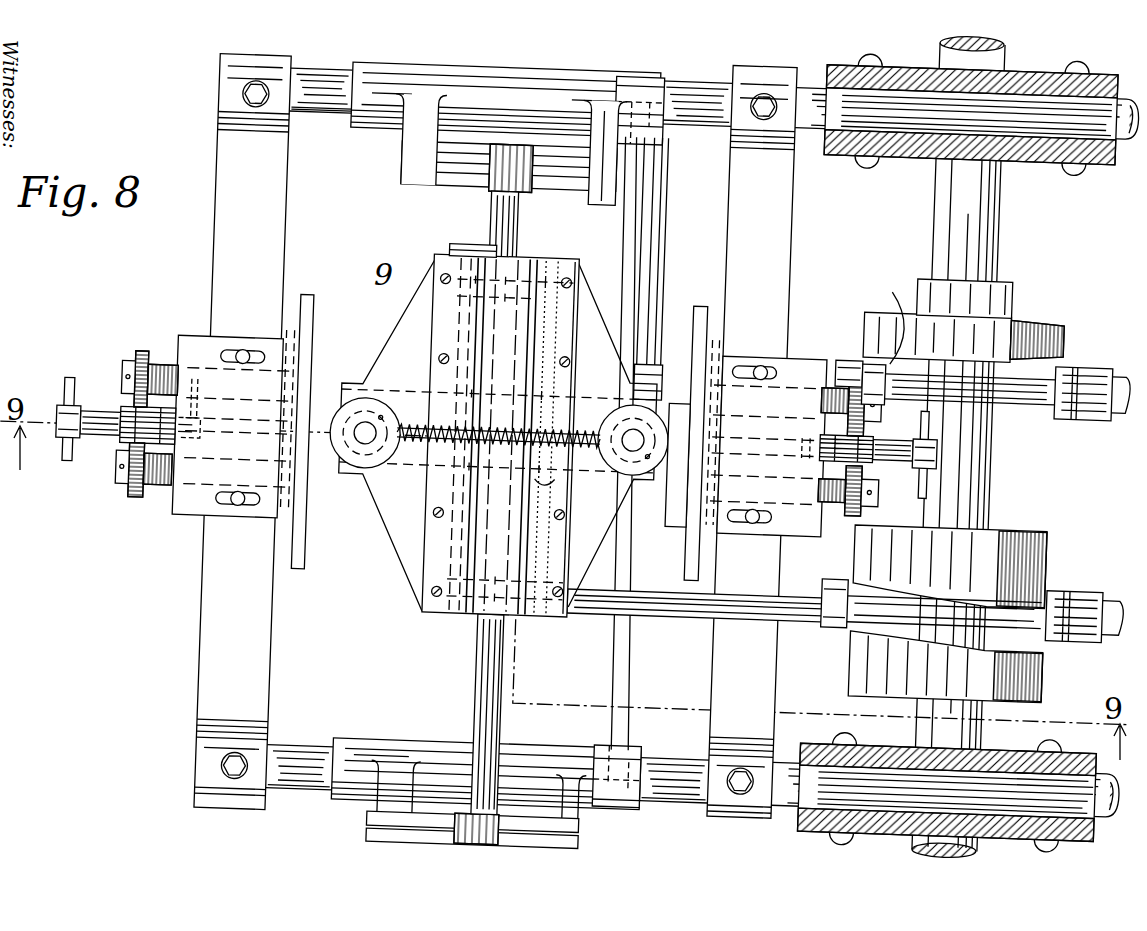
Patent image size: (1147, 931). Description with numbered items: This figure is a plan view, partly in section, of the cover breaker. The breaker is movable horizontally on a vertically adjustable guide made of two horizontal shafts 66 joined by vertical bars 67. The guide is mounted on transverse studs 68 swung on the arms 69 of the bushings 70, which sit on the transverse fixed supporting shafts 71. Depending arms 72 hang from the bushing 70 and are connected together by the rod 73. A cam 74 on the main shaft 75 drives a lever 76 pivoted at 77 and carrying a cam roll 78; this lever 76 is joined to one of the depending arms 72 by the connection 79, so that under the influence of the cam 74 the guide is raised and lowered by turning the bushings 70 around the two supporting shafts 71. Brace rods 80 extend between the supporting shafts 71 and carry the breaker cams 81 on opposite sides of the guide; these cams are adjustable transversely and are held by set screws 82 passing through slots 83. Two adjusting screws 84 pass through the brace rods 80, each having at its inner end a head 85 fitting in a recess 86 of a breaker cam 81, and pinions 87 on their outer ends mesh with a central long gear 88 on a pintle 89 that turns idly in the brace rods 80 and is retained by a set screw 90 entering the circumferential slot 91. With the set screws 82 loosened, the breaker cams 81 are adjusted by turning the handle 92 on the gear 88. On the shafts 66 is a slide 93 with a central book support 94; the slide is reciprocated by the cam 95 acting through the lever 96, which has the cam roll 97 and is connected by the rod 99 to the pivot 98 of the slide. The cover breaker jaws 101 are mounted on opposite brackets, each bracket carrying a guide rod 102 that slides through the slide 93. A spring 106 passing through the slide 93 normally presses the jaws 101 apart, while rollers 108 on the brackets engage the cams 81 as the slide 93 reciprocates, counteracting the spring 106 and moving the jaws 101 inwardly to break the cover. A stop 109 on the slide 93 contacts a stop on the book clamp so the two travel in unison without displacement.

The horizontal shafts 66 is at (500, 204).
The vertical bars 67 is at (490, 177).
The transverse studs 68 is at (445, 153).
The arms 69 is at (405, 142).
The bushing 70 is at (433, 748).
The transverse fixed supporting shafts 71 is at (320, 78).
The depending arms 72 is at (634, 102).
The rod 73 is at (620, 650).
The cam 74 is at (1012, 325).
The main shaft 75 is at (965, 243).
The lever 76 is at (840, 359).
The pivot 77 is at (1090, 412).
The cam roll 78 is at (888, 344).
The connection 79 is at (660, 264).
The brace rods 80 is at (495, 438).
The breaker cams 81 is at (318, 392).
The set screws 82 is at (243, 354).
The slots 83 is at (262, 355).
The adjusting screws 84 is at (162, 372).
The head 85 is at (300, 370).
The recess 86 is at (280, 529).
The pinions 87 is at (140, 352).
The gear 88 is at (125, 439).
The pintle 89 is at (97, 412).
The set screw 90 is at (205, 426).
The circumferential slot 91 is at (195, 408).
The handle 92 is at (65, 402).
The slide 93 is at (495, 598).
The central book support 94 is at (520, 364).
The cam 95 is at (947, 614).
The lever 96 is at (835, 585).
The cam roll 97 is at (853, 630).
The pivot 98 is at (553, 270).
The rod 99 is at (555, 485).
The cover breaker jaws 101 is at (480, 374).
The guide rod 102 is at (352, 470).
The spring 106 is at (455, 449).
The rollers 108 is at (372, 462).
The stop 109 is at (468, 259).